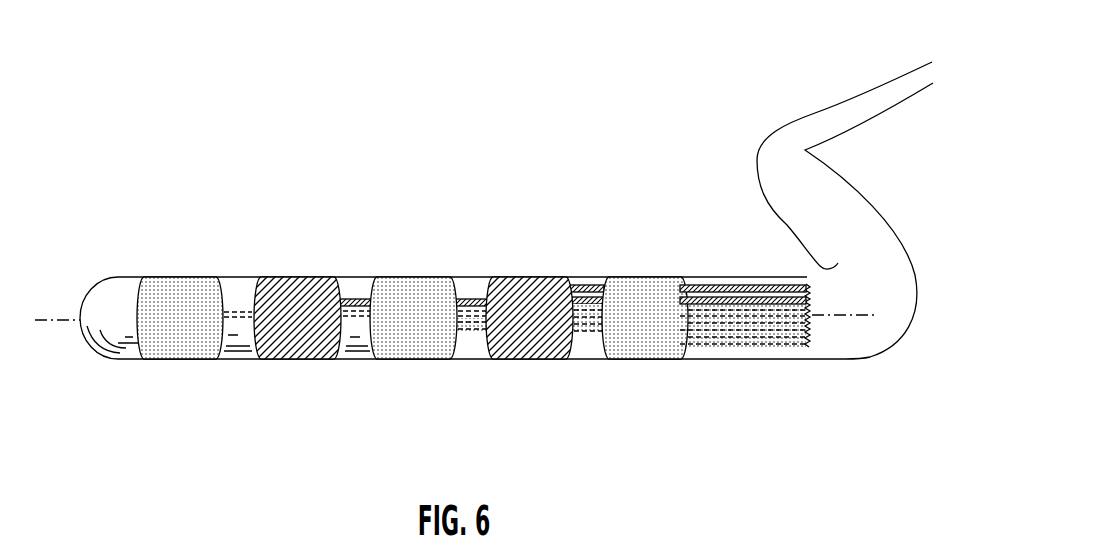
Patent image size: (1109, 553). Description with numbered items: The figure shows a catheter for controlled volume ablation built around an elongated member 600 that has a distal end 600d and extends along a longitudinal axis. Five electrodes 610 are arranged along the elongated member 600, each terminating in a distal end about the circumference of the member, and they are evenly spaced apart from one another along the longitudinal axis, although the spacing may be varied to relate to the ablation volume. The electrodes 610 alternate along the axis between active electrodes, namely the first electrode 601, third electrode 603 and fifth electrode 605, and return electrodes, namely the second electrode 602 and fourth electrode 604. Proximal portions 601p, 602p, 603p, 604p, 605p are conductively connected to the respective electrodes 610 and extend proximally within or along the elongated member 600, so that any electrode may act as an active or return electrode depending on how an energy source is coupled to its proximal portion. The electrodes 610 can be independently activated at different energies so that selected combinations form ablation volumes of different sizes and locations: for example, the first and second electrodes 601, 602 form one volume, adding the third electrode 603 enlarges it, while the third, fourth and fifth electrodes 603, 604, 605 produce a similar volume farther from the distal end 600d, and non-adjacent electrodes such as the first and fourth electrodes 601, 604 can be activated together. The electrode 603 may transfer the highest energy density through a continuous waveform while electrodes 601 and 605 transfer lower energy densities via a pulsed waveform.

The elongated member 600 is at (467, 297).
The distal end 600d is at (107, 303).
The first electrode 601 is at (180, 290).
The second electrode 602 is at (297, 290).
The third electrode 603 is at (410, 288).
The fourth electrode 604 is at (526, 288).
The fifth electrode 605 is at (657, 284).
The proximal portion of first electrode 601p is at (788, 313).
The proximal portion of second electrode 602p is at (780, 298).
The proximal portion of third electrode 603p is at (773, 327).
The proximal portion of fourth electrode 604p is at (769, 286).
The proximal portion of fifth electrode 605p is at (742, 342).
The electrode 610 is at (177, 343).